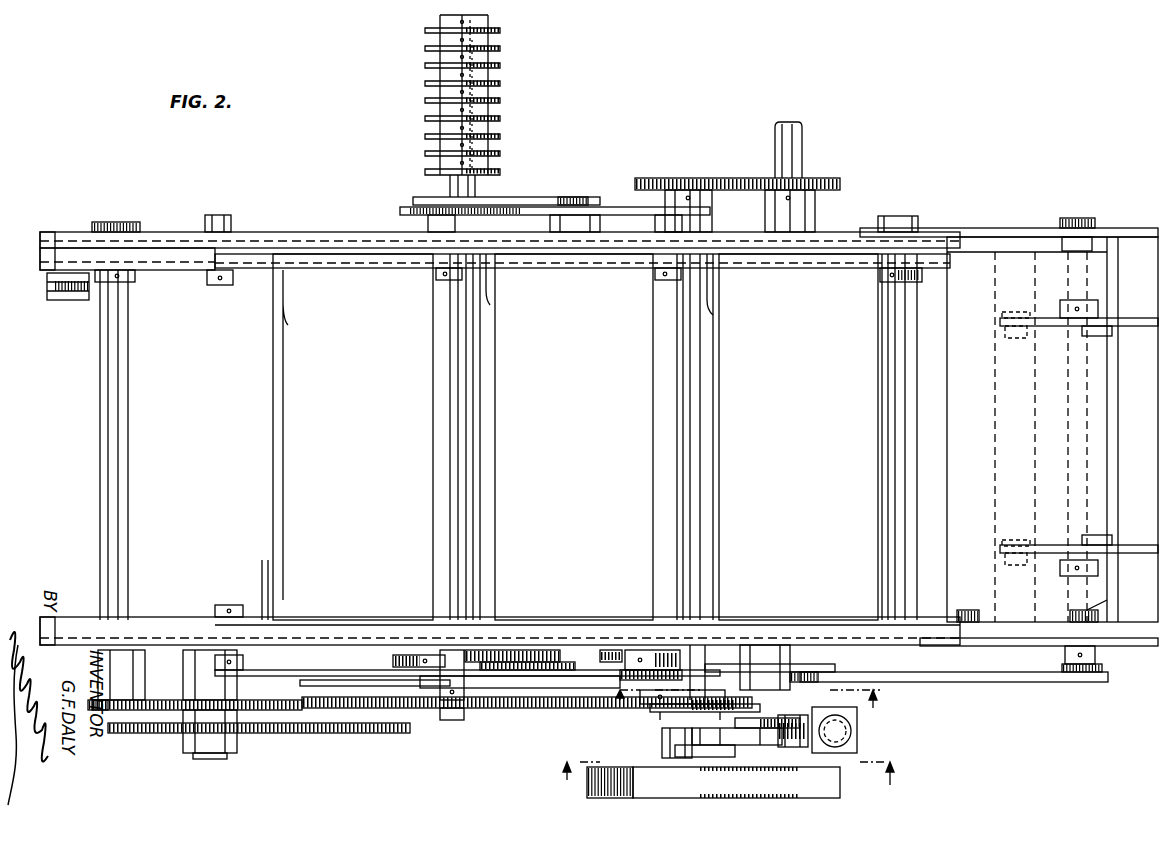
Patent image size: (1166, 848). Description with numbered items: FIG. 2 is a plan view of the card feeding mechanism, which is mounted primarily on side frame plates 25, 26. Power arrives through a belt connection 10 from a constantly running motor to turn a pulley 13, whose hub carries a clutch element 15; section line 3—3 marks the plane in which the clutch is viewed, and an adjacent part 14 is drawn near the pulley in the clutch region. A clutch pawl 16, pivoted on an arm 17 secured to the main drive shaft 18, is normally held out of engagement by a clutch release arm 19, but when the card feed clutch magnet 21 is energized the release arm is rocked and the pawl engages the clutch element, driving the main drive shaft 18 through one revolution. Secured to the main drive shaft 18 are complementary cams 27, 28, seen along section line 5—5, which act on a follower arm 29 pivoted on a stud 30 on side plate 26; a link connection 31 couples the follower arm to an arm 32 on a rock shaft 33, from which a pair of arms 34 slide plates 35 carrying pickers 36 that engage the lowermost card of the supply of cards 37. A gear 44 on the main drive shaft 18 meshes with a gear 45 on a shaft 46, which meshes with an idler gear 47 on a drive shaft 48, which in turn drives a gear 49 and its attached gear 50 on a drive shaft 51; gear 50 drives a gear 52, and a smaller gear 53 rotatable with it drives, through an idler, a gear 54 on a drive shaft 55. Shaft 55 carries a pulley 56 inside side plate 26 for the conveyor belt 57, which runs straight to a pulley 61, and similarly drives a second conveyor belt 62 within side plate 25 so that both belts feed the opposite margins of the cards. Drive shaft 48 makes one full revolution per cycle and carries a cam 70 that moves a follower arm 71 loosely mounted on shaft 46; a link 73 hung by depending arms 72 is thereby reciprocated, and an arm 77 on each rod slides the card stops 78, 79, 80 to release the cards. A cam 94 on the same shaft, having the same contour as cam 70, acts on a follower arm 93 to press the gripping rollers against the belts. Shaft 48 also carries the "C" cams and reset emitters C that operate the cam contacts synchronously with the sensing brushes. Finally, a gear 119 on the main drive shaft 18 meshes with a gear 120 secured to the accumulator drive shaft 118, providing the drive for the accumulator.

The section line 3— 3 is at (727, 762).
The section line 5— 5 is at (752, 688).
The belt connection 10 is at (842, 780).
The pulley 13 is at (605, 767).
The bracket 14 is at (675, 752).
The clutch element 15 is at (662, 745).
The clutch pawl 16 is at (712, 748).
The arm 17 is at (742, 722).
The main drive shaft 18 is at (693, 180).
The clutch release arm 19 is at (792, 748).
The magnet 21 is at (857, 730).
The side frame plate 25 is at (972, 233).
The side frame plate 26 is at (1022, 646).
The complementary cam 27 is at (630, 672).
The complementary cam 28 is at (626, 658).
The follower arm 29 is at (762, 664).
The stud 30 is at (788, 680).
The link connection 31 is at (962, 686).
The arm 32 is at (1103, 665).
The rock shaft 33 is at (1100, 622).
The arms 34 is at (1100, 300).
The slidably mounted plate 35 is at (1040, 335).
The picker 36 is at (1110, 336).
The supply of cards 37 is at (950, 400).
The gear 44 is at (730, 706).
The gear 45 is at (518, 708).
The shaft 46 is at (573, 197).
The idler gear 47 is at (466, 708).
The drive shaft 48 is at (481, 513).
The gear 49 is at (318, 700).
The gear 50 is at (397, 734).
The drive shaft 51 is at (352, 734).
The gear 52 is at (268, 734).
The gear 53 is at (172, 700).
The gear 54 is at (97, 710).
The drive shaft 55 is at (130, 572).
The pulley 56 is at (63, 628).
The conveyor belt 57 is at (108, 625).
The pulley 61 is at (967, 612).
The conveyor belt 62 is at (207, 255).
The cam 70 is at (533, 668).
The follower arm 71 is at (545, 688).
The depending arm 72 is at (232, 655).
The link 73 is at (285, 678).
The arm 77 is at (263, 618).
The card stop 78 is at (720, 376).
The card stop 79 is at (482, 414).
The card stop 80 is at (272, 420).
The follower arm 93 is at (404, 655).
The cam 94 is at (510, 662).
The accumulator drive shaft 118 is at (800, 141).
The gear 119 is at (646, 178).
The gear 120 is at (838, 183).
The "C" cams and reset emitters C is at (500, 168).